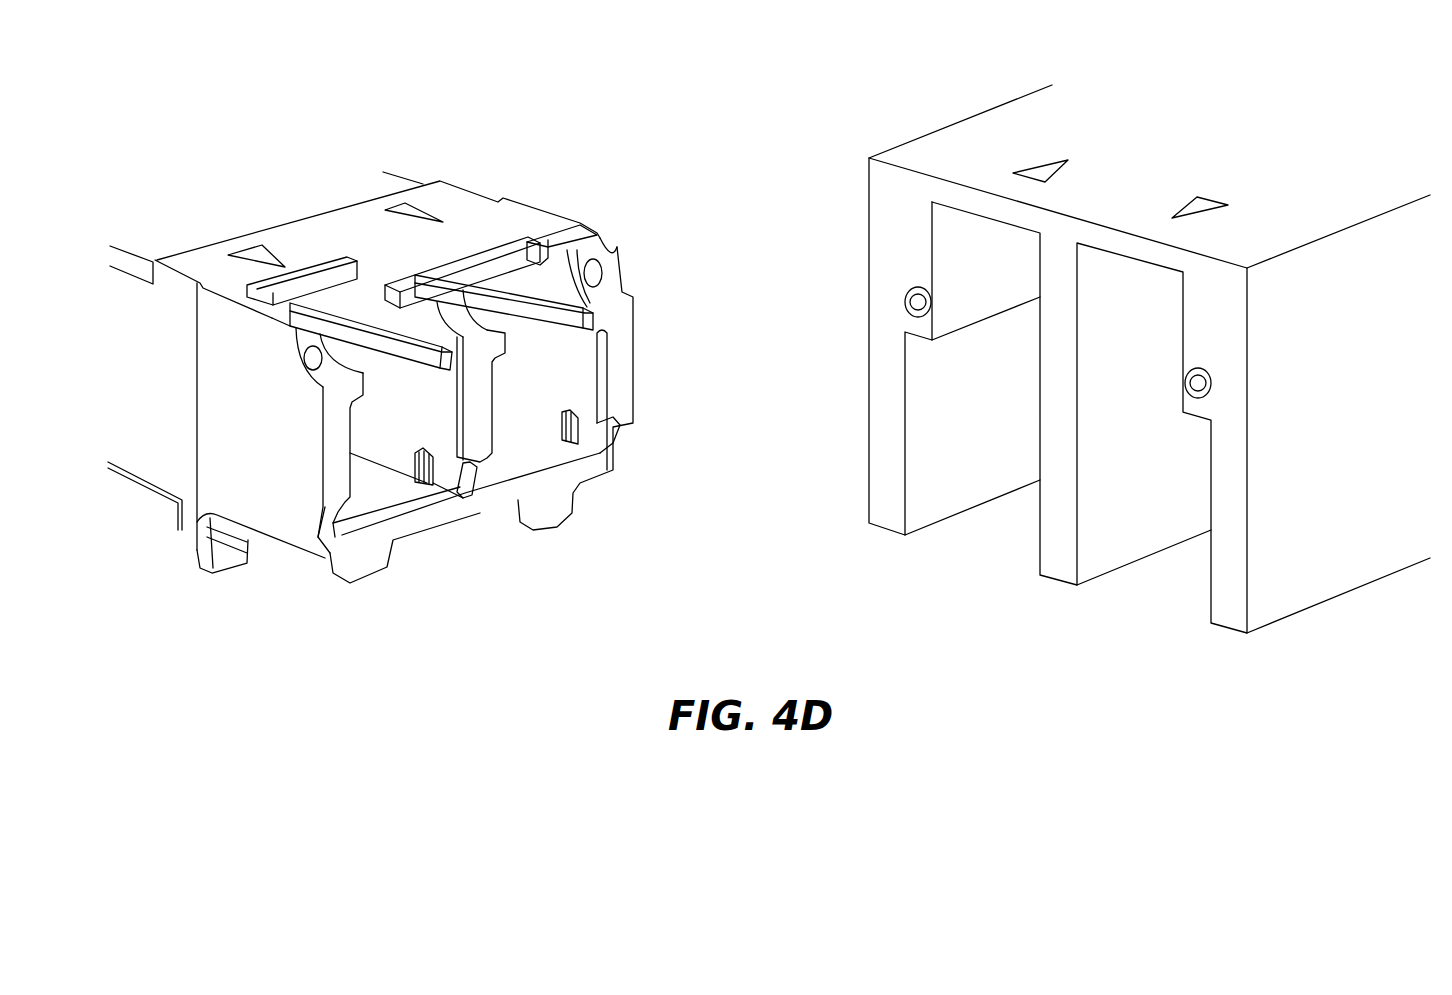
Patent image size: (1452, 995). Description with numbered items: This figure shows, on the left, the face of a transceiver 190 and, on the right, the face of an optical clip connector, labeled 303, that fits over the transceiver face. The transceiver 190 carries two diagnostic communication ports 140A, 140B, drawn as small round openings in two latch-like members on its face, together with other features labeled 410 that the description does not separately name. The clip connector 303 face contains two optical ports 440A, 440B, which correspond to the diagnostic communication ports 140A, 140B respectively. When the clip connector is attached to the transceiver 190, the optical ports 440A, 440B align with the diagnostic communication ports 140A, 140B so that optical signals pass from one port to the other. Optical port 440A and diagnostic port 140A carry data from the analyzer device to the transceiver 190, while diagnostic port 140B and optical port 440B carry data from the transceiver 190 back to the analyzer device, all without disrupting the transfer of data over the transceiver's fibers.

The transceiver 190 is at (317, 598).
The diagnostic communication port 140A is at (312, 360).
The diagnostic communication port 140B is at (598, 272).
The hooks 410 is at (385, 440).
The bracket 303 is at (1046, 590).
The optical port 440A is at (1197, 385).
The optical port 440B is at (918, 305).